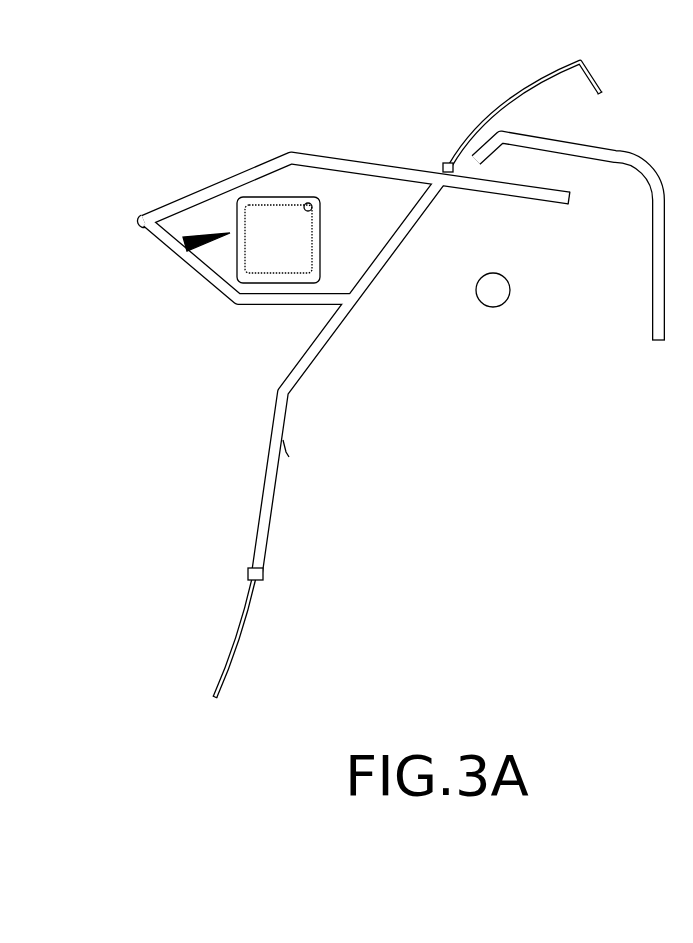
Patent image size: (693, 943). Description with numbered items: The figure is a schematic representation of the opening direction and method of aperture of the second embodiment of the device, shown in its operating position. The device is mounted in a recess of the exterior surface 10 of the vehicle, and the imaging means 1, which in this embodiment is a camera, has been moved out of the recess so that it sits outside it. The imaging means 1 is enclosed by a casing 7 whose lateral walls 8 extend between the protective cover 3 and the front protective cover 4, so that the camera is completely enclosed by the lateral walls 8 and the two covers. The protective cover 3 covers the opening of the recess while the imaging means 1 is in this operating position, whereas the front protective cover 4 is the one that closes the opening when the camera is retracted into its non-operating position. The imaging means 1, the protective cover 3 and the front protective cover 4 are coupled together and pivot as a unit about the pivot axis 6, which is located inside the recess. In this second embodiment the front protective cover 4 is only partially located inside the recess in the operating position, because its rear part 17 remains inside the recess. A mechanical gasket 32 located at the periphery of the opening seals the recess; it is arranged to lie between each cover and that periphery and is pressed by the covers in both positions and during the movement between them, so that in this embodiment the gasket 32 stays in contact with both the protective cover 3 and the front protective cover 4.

The imaging means 1 is at (300, 230).
The protective cover 3 is at (382, 273).
The front protective cover 4 is at (343, 152).
The pivot axis 6 is at (490, 288).
The casing 7 is at (187, 245).
The lateral walls 8 is at (190, 267).
The exterior surface 10 is at (540, 83).
The rear part 17 is at (140, 213).
The mechanical gasket 32 is at (446, 163).